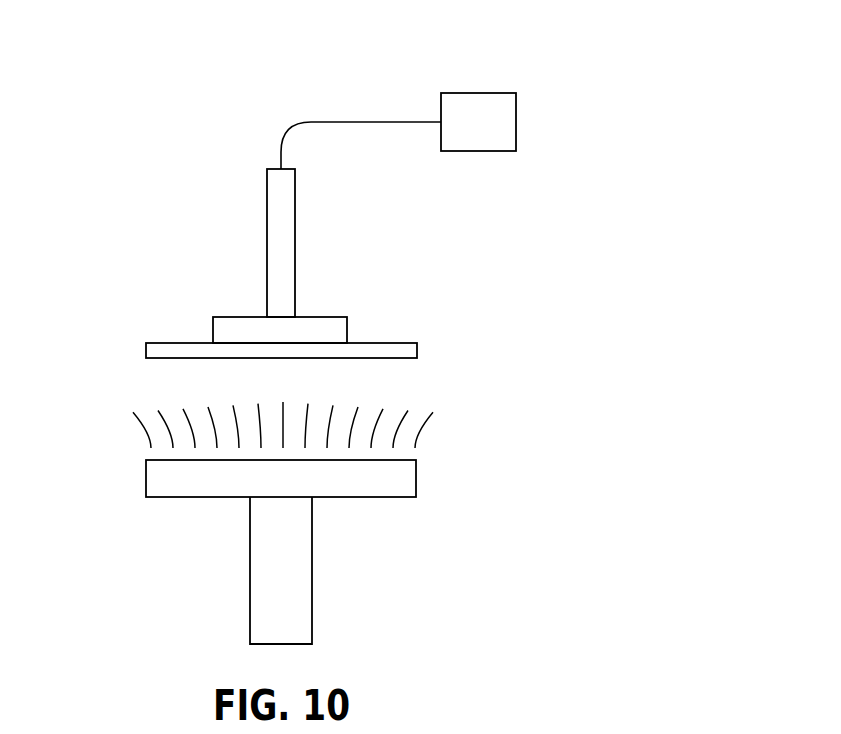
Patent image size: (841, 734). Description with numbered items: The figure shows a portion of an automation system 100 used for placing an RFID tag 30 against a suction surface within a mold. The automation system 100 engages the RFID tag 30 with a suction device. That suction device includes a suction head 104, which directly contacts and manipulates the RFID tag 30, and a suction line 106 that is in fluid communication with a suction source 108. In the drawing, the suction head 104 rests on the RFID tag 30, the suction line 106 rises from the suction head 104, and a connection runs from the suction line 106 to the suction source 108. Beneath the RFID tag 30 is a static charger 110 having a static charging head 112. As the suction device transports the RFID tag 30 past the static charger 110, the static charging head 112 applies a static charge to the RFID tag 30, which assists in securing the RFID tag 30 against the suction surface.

The automation system 100 is at (152, 210).
The suction source 108 is at (478, 93).
The suction line 106 is at (295, 215).
The suction head 104 is at (348, 327).
The RFID tag 30 is at (417, 351).
The static charger 110 is at (96, 422).
The static charging head 112 is at (417, 478).